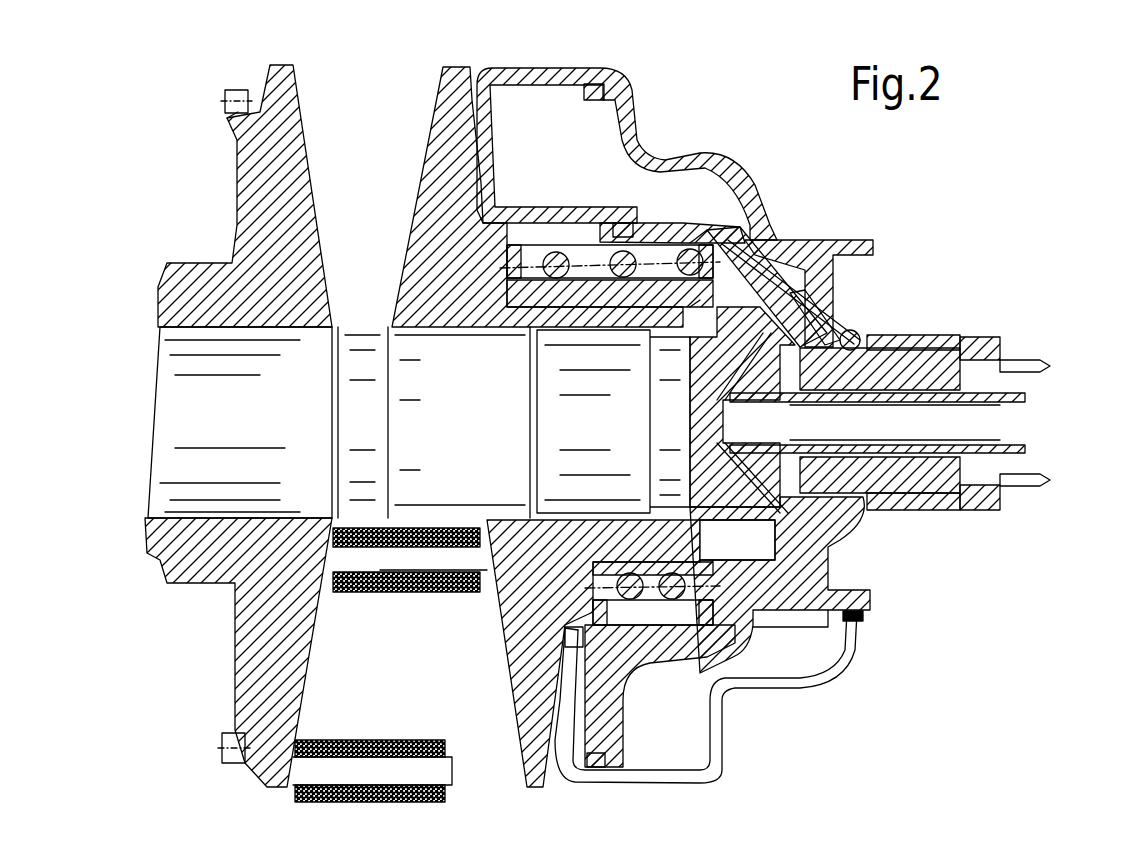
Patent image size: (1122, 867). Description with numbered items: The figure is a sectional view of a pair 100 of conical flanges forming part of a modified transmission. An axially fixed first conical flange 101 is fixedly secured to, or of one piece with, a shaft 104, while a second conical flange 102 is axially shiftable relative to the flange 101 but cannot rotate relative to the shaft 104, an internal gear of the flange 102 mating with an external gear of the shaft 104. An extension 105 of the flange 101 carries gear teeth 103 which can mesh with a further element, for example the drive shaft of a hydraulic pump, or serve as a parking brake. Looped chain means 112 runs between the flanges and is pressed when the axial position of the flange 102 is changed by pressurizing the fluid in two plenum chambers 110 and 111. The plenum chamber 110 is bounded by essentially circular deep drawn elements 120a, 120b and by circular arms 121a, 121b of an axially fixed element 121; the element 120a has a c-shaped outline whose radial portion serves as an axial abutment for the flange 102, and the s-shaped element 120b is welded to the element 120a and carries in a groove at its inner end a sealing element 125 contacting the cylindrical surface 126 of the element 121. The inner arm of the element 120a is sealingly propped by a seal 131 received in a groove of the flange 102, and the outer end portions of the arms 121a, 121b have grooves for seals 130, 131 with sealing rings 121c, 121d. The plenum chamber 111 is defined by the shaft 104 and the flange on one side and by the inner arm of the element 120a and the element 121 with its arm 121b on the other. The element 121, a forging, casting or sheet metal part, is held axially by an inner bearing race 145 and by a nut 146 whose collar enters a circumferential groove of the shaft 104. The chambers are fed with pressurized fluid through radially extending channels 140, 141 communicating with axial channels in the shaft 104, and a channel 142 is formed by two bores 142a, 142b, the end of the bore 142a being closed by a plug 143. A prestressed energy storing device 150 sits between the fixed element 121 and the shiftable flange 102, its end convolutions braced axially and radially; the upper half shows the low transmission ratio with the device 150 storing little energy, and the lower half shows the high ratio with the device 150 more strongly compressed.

The pair of conical flanges 100 is at (398, 62).
The first conical flange 101 is at (281, 80).
The second conical flange 102 is at (452, 76).
The gear teeth 103 is at (232, 100).
The shaft 104 is at (176, 371).
The extension 105 is at (230, 115).
The plenum chamber 110 is at (596, 88).
The plenum chamber 111 is at (745, 300).
The looped chain means 112 is at (406, 766).
The circular element 120a is at (562, 110).
The circular element 120b is at (630, 110).
The axially fixed element 121 is at (840, 262).
The circular arm 121a is at (677, 173).
The circular arm 121b is at (690, 230).
The sealing ring 121c is at (596, 768).
The sealing ring 121d is at (630, 628).
The sealing element 125 is at (865, 617).
The cylindrical surface 126 is at (818, 615).
The seal 130 is at (622, 80).
The seal 131 is at (565, 632).
The channel 140 is at (847, 513).
The channel 141 is at (897, 337).
The channel 142 is at (770, 265).
The bore 142a is at (850, 320).
The bore 142b is at (697, 372).
The plug 143 is at (853, 343).
The inner bearing race 145 is at (957, 337).
The nut 146 is at (1000, 342).
The energy storing device 150 is at (712, 640).